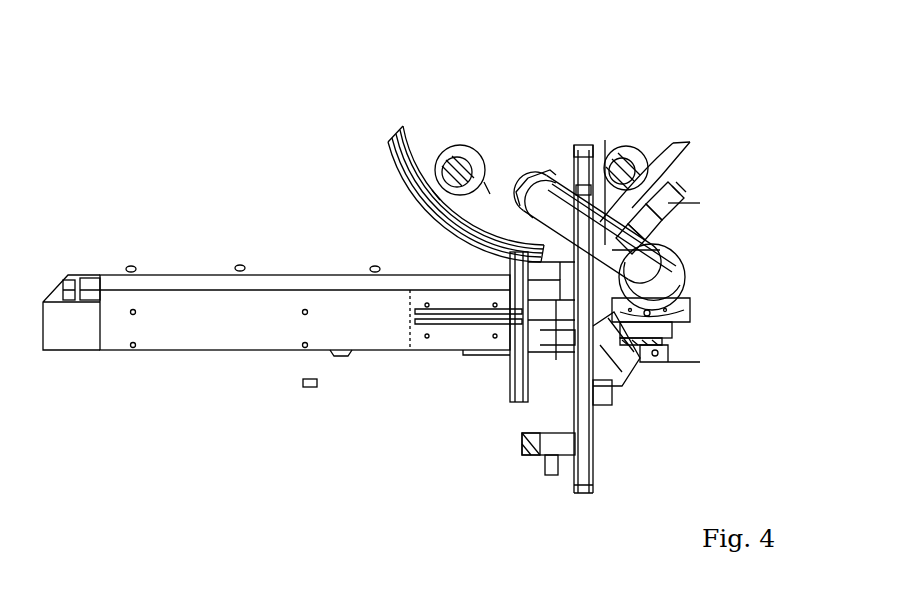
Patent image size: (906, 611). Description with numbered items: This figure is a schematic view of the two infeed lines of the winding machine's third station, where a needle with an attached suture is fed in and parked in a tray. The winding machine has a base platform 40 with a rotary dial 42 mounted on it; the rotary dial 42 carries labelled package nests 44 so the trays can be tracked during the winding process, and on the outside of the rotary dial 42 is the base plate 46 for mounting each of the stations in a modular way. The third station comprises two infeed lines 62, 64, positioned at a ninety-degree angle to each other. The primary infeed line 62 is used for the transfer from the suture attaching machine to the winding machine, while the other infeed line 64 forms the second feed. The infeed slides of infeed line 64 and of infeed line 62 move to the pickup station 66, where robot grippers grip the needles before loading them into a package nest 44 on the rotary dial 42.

The base platform 40 is at (397, 123).
The rotary dial 42 is at (538, 152).
The package nest 44 is at (465, 136).
The base plate 46 is at (690, 162).
The primary infeed line 62 is at (593, 452).
The infeed line 64 is at (192, 300).
The pickup station 66 is at (683, 273).